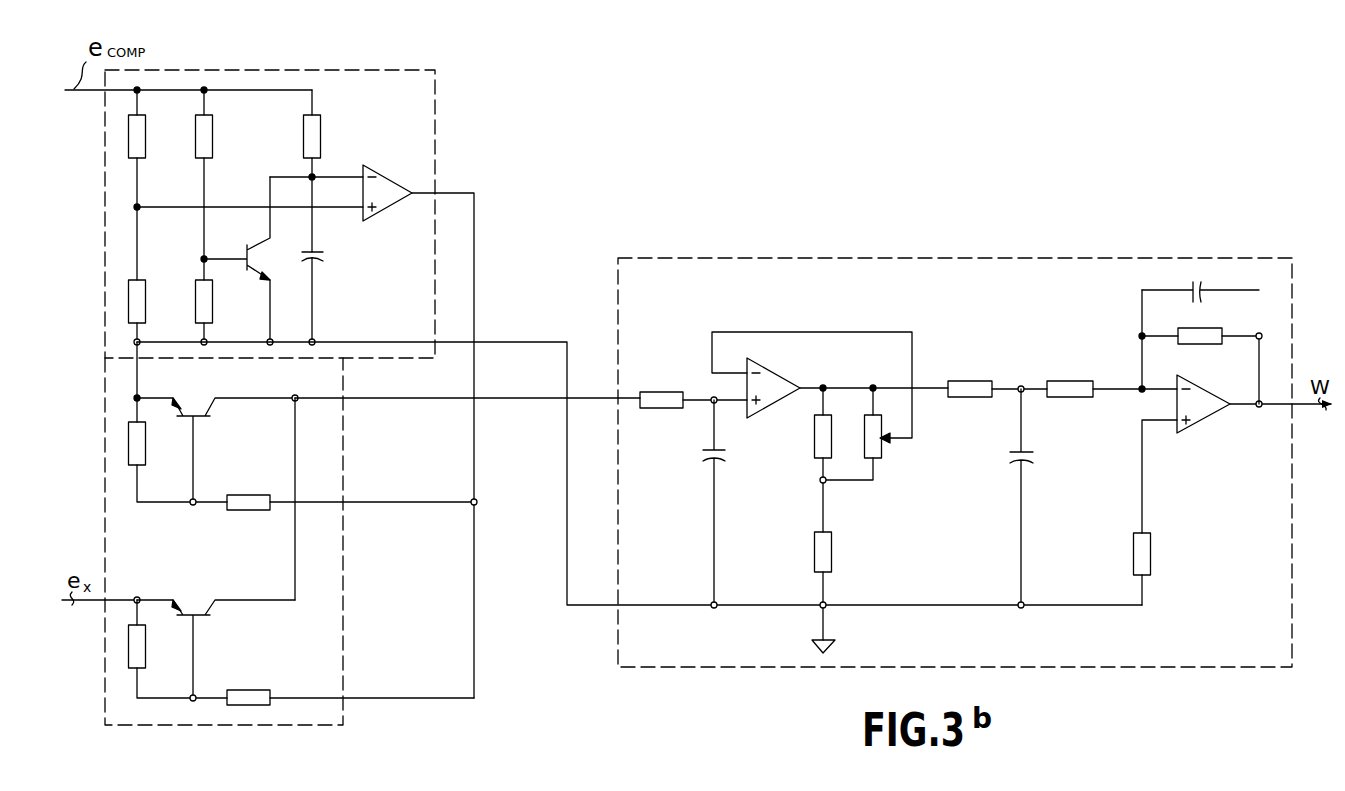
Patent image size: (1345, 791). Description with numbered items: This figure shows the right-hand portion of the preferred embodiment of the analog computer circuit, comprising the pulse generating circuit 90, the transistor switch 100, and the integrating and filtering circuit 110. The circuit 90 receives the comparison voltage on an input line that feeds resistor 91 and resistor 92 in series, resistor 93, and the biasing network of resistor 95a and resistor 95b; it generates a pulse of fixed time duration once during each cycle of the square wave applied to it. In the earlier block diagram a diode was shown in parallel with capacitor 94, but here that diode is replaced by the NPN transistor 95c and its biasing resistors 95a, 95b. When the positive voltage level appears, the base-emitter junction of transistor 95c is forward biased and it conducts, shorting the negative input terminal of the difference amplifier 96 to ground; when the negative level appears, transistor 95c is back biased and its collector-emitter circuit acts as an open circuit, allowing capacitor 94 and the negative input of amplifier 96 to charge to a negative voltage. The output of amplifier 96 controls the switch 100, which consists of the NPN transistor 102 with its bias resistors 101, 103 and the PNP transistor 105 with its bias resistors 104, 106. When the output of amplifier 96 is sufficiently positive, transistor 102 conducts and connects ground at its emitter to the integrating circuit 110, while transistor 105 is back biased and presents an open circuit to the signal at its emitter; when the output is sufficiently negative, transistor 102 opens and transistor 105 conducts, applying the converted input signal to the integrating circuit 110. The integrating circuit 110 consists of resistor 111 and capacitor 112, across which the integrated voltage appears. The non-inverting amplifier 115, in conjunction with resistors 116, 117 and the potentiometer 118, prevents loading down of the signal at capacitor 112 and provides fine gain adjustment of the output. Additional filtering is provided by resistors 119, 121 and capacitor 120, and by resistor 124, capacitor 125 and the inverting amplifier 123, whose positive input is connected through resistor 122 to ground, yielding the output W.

The pulse generating circuit 90 is at (409, 105).
The resistor 91 is at (147, 137).
The resistor 92 is at (147, 309).
The resistor 93 is at (322, 137).
The capacitor 94 is at (325, 256).
The biasing resistor 95a is at (215, 137).
The biasing resistor 95b is at (212, 313).
The NPN transistor 95c is at (252, 263).
The difference amplifier 96 is at (395, 178).
The switch 100 is at (208, 556).
The bias resistor 101 is at (167, 466).
The NPN transistor 102 is at (199, 403).
The bias resistor 103 is at (249, 495).
The bias resistor 104 is at (167, 656).
The PNP transistor 105 is at (200, 604).
The bias resistor 106 is at (251, 690).
The integrating circuit 110 is at (938, 301).
The resistor 111 is at (656, 392).
The capacitor 112 is at (700, 455).
The non-inverting amplifier 115 is at (779, 379).
The resistor 116 is at (814, 433).
The resistor 117 is at (814, 550).
The potentiometer 118 is at (905, 451).
The resistor 119 is at (966, 382).
The capacitor 120 is at (1010, 454).
The resistor 121 is at (1078, 381).
The resistor 122 is at (1152, 557).
The inverting amplifier 123 is at (1206, 392).
The resistor 124 is at (1207, 330).
The capacitor 125 is at (1204, 280).